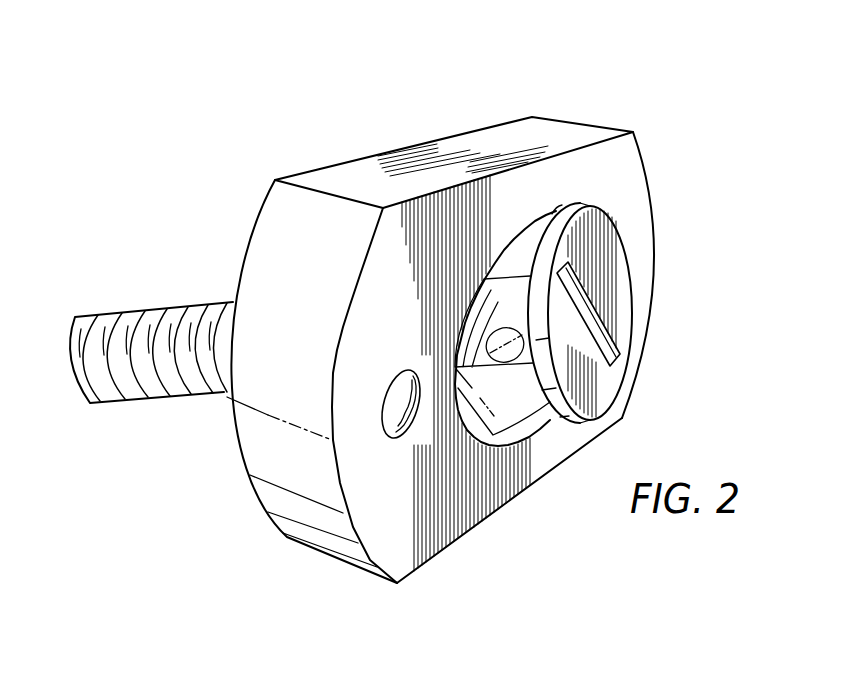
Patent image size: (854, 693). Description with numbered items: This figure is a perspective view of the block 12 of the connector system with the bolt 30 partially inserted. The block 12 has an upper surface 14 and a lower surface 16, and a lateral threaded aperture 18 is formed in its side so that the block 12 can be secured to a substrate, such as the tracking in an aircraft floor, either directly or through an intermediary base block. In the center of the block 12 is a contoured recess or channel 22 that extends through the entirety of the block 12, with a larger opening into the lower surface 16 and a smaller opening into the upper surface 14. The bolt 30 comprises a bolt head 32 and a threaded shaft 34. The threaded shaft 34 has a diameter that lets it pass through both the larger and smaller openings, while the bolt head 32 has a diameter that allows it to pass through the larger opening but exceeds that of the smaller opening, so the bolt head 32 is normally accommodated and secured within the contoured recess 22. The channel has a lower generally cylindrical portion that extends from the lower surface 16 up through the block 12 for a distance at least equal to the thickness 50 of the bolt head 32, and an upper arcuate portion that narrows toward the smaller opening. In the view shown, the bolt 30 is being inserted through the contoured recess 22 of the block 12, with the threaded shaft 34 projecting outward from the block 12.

The block 12 is at (632, 182).
The upper surface 14 is at (258, 221).
The lower surface 16 is at (405, 517).
The lateral threaded aperture 18 is at (410, 428).
The contoured recess or channel 22 is at (500, 422).
The bolt 30 is at (106, 313).
The bolt head 32 is at (617, 298).
The threaded shaft 34 is at (143, 385).
The thickness of the bolt head 50 is at (557, 212).